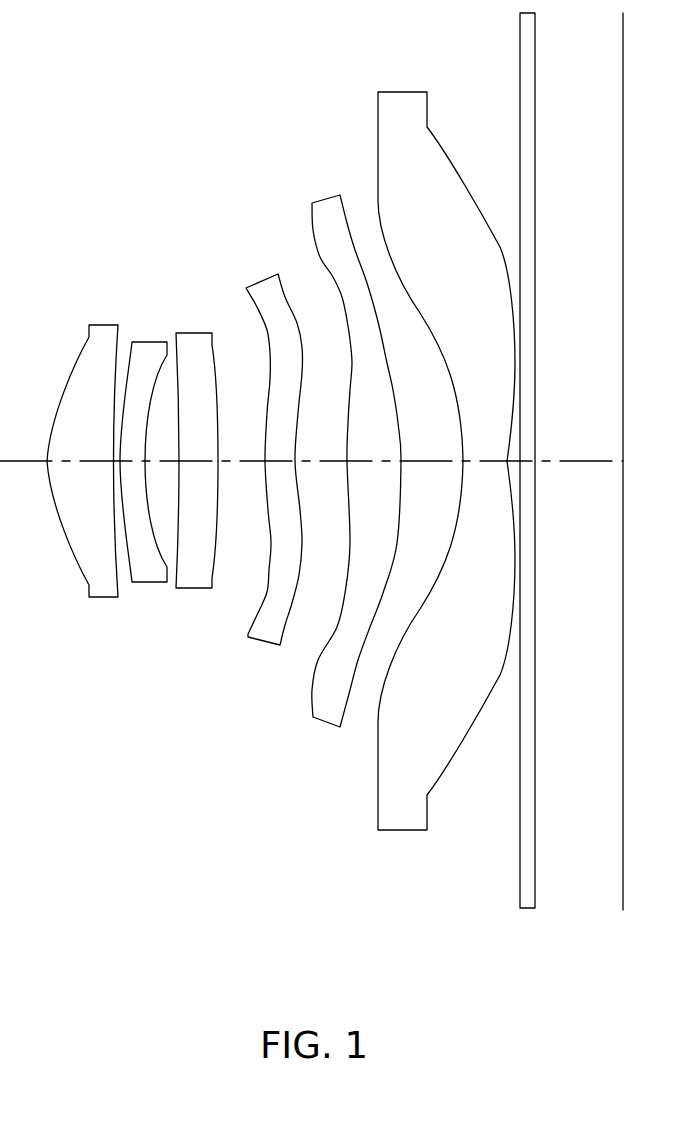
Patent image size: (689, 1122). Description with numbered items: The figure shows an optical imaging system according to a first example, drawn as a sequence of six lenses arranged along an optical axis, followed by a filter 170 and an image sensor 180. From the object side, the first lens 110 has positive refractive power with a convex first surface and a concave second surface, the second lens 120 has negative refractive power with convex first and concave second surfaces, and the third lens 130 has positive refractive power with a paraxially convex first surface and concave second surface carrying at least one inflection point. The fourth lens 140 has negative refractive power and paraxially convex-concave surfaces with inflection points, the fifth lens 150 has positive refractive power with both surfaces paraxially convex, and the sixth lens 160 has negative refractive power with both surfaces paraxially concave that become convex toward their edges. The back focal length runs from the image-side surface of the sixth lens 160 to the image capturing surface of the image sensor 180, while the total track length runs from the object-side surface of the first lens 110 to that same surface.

The first lens 110 is at (105, 598).
The second lens 120 is at (150, 582).
The third lens 130 is at (195, 590).
The fourth lens 140 is at (265, 648).
The fifth lens 150 is at (336, 729).
The sixth lens 160 is at (402, 832).
The filter 170 is at (528, 909).
The image sensor 180 is at (623, 882).